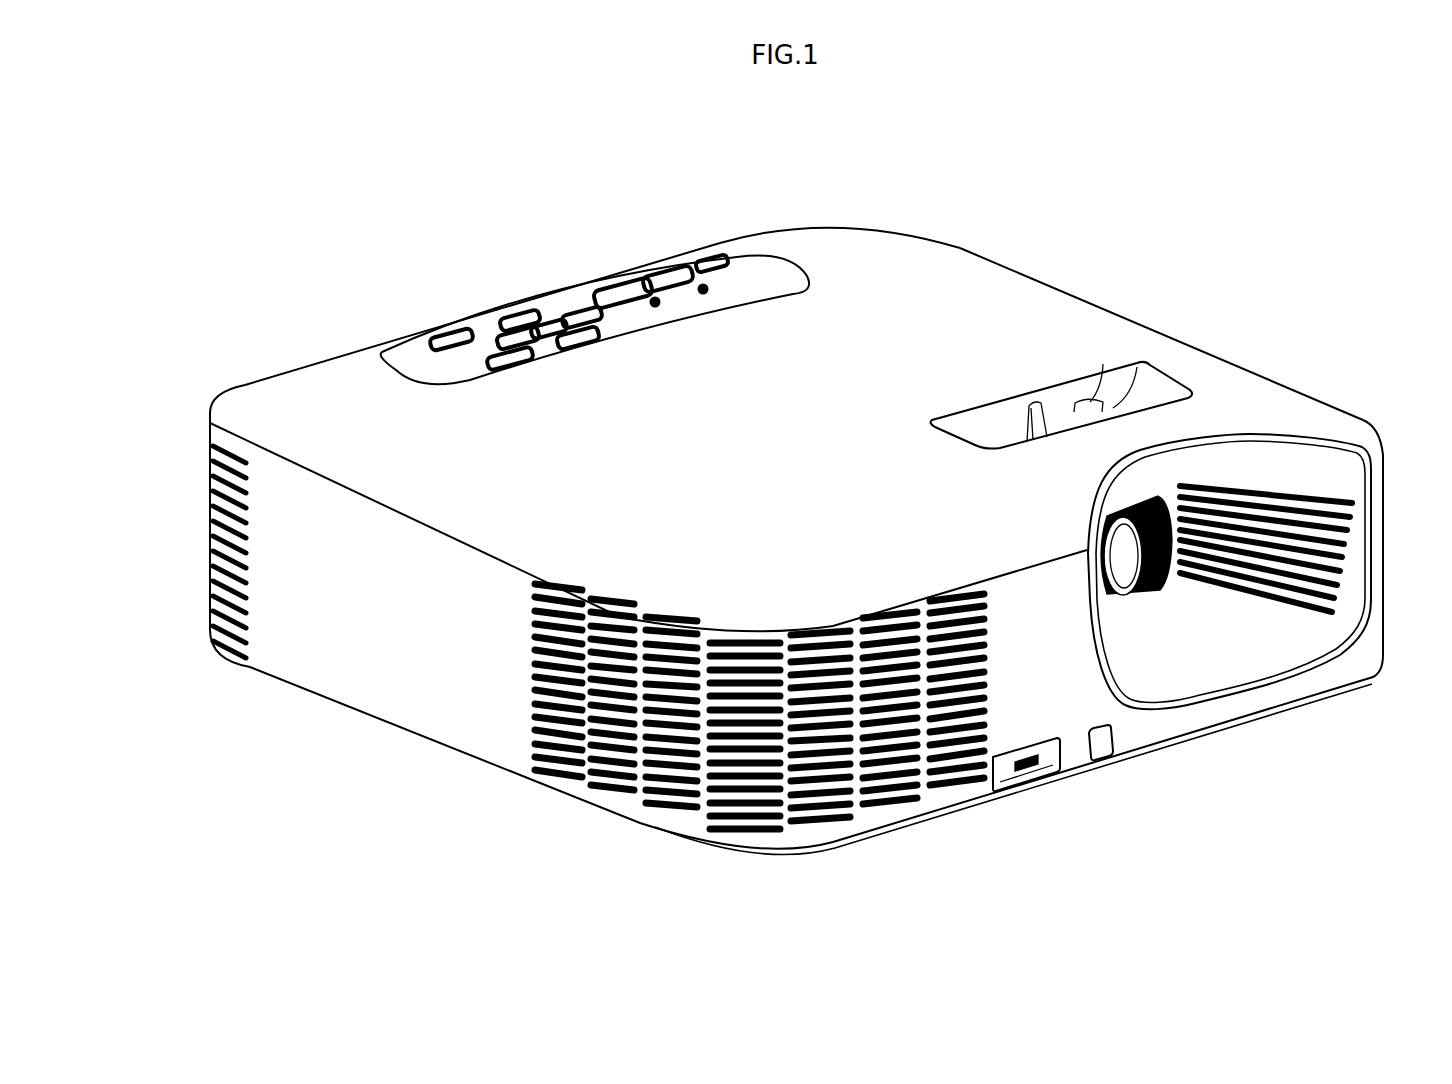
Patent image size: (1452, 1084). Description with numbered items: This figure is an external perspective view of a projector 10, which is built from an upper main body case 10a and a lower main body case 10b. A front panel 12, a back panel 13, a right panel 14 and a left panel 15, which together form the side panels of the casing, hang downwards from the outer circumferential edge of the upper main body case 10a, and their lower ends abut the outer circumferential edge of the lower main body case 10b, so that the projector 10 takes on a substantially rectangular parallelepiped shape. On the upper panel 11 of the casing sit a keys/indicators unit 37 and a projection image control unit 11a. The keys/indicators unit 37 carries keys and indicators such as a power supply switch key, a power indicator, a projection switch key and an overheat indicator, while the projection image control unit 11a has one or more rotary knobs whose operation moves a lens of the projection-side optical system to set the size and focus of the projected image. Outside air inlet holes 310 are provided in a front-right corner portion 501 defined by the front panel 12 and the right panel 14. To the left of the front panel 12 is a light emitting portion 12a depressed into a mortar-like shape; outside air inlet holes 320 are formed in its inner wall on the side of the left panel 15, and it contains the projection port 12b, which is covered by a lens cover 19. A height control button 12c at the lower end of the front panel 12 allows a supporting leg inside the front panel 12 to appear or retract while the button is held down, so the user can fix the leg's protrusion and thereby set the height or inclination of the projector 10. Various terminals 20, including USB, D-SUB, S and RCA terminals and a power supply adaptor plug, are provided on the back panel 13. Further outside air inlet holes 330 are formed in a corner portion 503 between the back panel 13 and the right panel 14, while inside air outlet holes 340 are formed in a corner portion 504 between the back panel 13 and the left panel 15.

The projector 10 is at (291, 226).
The upper main body case 10a is at (298, 377).
The lower main body case 10b is at (252, 670).
The upper panel 11 is at (912, 275).
The projection image control unit 11a is at (1050, 413).
The front panel 12 is at (1137, 730).
The light emitting portion 12a is at (1285, 475).
The projection port 12b is at (1165, 488).
The height control button 12c is at (1022, 788).
The back panel 13 is at (367, 343).
The right panel 14 is at (360, 677).
The left panel 15 is at (1282, 366).
The lens cover 19 is at (1145, 593).
The terminals 20 is at (494, 280).
The keys/indicators unit 37 is at (748, 272).
The outside air inlet holes 310 is at (727, 828).
The outside air inlet holes 320 is at (1307, 497).
The outside air inlet holes 330 is at (212, 470).
The inside air outlet holes 340 is at (885, 213).
The front-right corner portion 501 is at (818, 875).
The corner portion 503 is at (189, 384).
The corner portion 504 is at (905, 217).